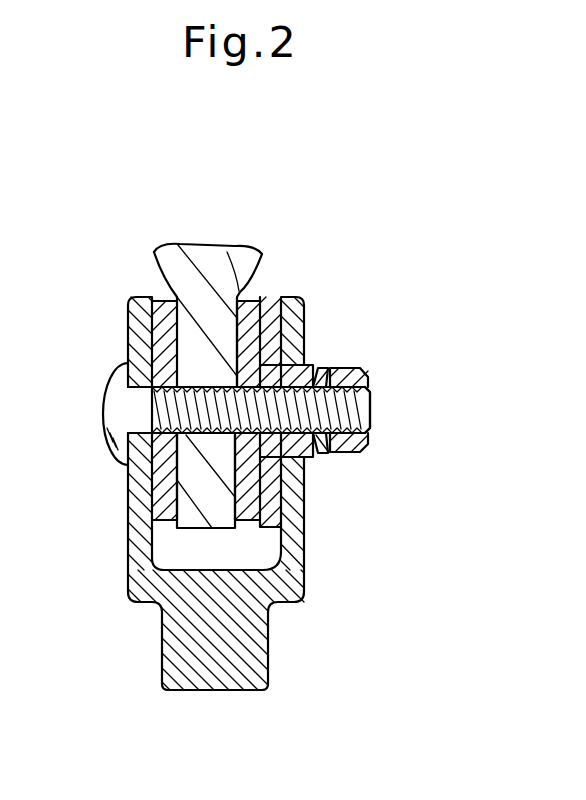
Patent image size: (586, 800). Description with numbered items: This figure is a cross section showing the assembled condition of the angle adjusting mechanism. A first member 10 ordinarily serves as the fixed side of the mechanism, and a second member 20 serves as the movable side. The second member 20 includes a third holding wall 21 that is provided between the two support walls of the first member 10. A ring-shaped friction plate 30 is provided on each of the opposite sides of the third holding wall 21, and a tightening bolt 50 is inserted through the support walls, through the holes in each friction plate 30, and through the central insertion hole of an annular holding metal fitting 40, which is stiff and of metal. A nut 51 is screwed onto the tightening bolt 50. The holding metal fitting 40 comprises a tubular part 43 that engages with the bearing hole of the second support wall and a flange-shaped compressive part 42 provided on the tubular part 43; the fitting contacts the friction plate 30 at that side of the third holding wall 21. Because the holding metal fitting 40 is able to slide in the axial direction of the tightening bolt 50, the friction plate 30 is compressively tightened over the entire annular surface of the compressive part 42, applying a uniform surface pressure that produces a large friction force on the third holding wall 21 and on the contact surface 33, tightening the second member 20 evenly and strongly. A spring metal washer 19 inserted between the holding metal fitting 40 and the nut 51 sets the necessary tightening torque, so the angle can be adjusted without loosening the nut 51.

The first member 10 is at (207, 668).
The spring metal washer 19 is at (331, 365).
The second member 20 is at (226, 250).
The third holding wall 21 is at (193, 519).
The friction plate 30 is at (167, 505).
The contact surface 33 is at (167, 301).
The holding metal fitting 40 is at (290, 478).
The compressive part 42 is at (300, 297).
The tubular part 43 is at (309, 364).
The tightening bolt 50 is at (112, 405).
The nut 51 is at (368, 450).